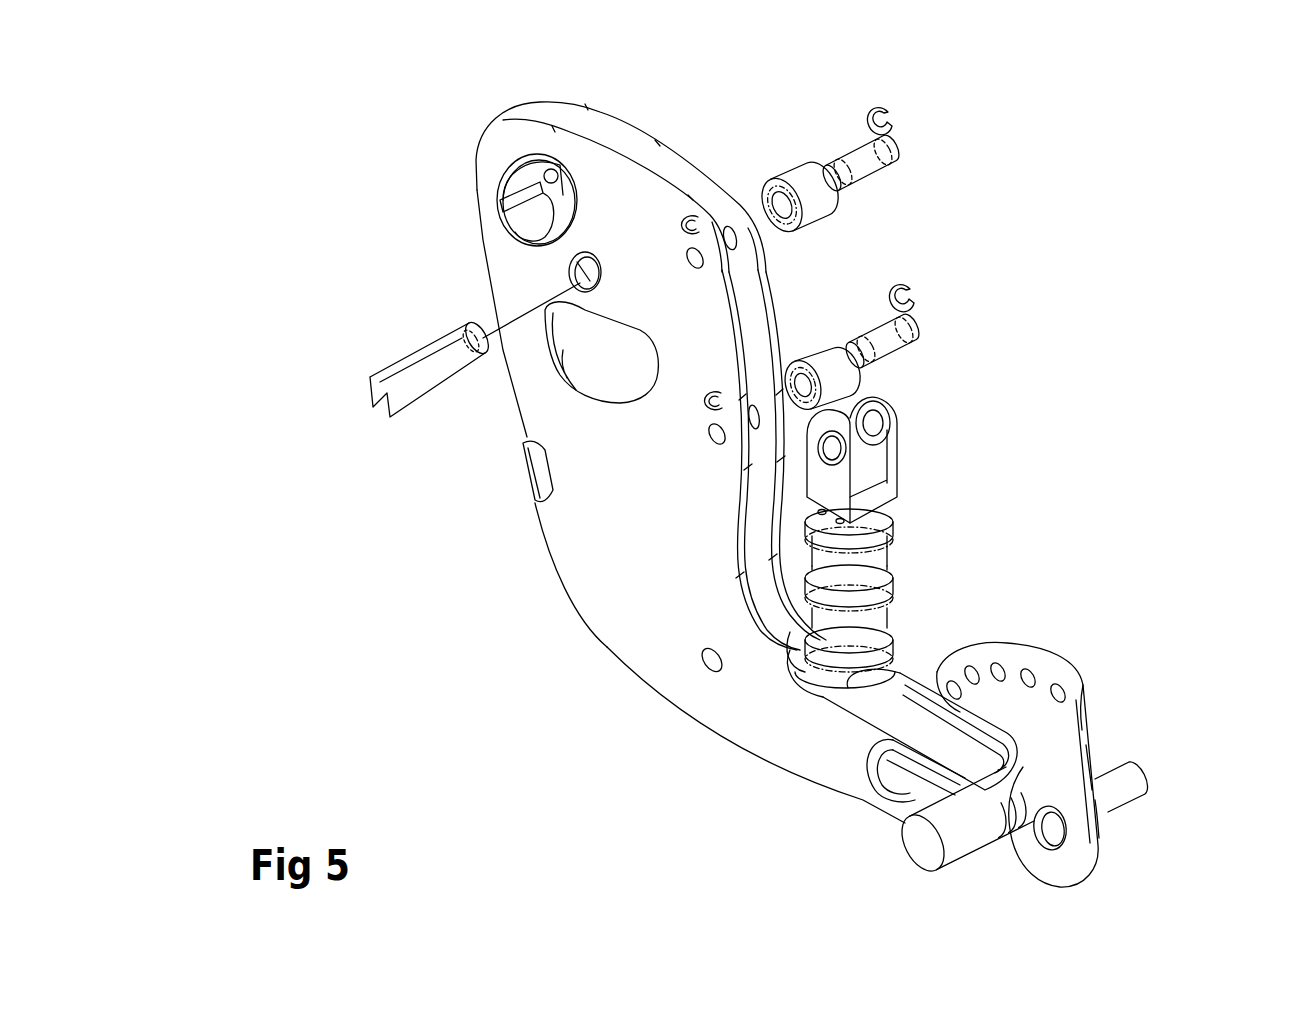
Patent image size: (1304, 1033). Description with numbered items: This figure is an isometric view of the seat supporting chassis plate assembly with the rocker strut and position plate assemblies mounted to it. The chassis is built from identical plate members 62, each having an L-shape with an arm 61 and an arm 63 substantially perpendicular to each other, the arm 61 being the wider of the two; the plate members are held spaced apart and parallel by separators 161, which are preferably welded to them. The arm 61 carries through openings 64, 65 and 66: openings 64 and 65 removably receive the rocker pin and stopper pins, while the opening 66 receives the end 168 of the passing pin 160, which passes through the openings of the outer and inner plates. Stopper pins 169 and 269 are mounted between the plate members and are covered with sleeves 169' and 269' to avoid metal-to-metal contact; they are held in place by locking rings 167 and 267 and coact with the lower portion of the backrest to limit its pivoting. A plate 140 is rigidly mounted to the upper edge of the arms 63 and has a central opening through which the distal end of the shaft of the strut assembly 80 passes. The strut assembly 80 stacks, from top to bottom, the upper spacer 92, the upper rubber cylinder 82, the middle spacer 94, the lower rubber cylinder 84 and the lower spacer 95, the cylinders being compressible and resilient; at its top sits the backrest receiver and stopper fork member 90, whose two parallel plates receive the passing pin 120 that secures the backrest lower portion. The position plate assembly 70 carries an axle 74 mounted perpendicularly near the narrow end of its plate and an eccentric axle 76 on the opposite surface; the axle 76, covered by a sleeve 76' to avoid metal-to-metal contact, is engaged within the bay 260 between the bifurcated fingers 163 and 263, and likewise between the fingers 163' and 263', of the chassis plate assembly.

The arm 61 is at (487, 257).
The plate member 62 is at (473, 196).
The arm 63 is at (747, 710).
The through opening 64 is at (567, 377).
The through opening 65 is at (553, 180).
The through opening 66 is at (571, 262).
The plate assembly 70 is at (1095, 674).
The axle 74 is at (1127, 797).
The axle 76 is at (922, 822).
The sleeve 76' is at (943, 843).
The strut assembly 80 is at (900, 537).
The upper rubber cylinder 82 is at (888, 553).
The lower rubber cylinder 84 is at (888, 625).
The backrest receiver and stopper fork member 90 is at (897, 457).
The upper spacer 92 is at (855, 537).
The middle spacer 94 is at (888, 602).
The lower spacer 95 is at (935, 660).
The passing pin 120 is at (867, 422).
The plate 140 is at (800, 647).
The passing pin 160 is at (427, 365).
The separator 161 is at (512, 172).
The bifurcated finger 163 is at (1145, 751).
The bifurcated finger 163' is at (1133, 701).
The locking ring 167 is at (890, 113).
The end 168 is at (484, 336).
The stopper pin 169 is at (921, 165).
The sleeve 169' is at (821, 152).
The bay 260 is at (870, 758).
The bifurcated finger 263 is at (1105, 839).
The bifurcated finger 263' is at (1172, 802).
The locking ring 267 is at (910, 293).
The stopper pin 269 is at (941, 331).
The sleeve 269' is at (861, 325).